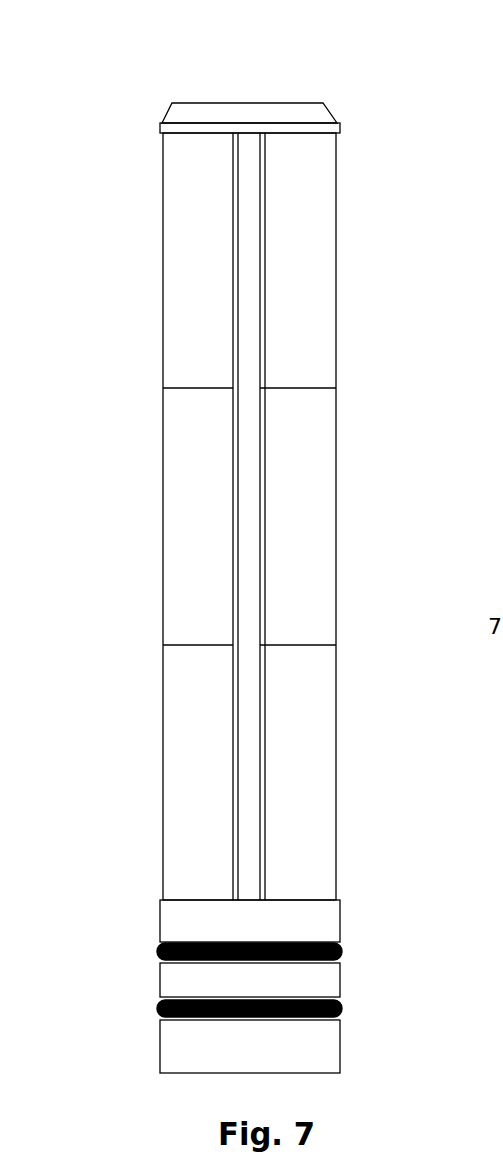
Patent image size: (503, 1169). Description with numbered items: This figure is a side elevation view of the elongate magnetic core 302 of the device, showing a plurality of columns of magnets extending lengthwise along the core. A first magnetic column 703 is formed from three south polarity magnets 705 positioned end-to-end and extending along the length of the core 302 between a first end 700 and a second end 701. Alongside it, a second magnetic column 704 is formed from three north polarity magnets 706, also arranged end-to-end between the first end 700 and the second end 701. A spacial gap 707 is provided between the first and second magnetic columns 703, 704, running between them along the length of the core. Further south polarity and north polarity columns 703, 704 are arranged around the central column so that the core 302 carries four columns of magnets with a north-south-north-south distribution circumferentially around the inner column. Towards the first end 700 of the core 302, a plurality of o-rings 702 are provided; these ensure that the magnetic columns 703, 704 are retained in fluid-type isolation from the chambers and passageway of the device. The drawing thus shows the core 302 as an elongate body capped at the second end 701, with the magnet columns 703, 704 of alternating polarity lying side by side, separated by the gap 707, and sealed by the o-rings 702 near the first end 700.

The elongate magnetic core 302 is at (346, 148).
The first end 700 is at (340, 1062).
The second end 701 is at (185, 113).
The o-rings 702 is at (342, 949).
The first magnetic column 703 is at (295, 133).
The second magnetic column 704 is at (207, 133).
The south polarity magnets 705 is at (317, 343).
The north polarity magnets 706 is at (178, 172).
The spacial gap 707 is at (252, 602).